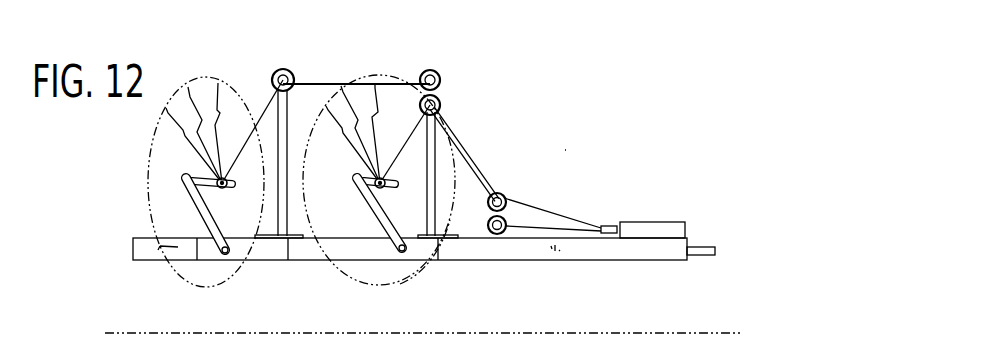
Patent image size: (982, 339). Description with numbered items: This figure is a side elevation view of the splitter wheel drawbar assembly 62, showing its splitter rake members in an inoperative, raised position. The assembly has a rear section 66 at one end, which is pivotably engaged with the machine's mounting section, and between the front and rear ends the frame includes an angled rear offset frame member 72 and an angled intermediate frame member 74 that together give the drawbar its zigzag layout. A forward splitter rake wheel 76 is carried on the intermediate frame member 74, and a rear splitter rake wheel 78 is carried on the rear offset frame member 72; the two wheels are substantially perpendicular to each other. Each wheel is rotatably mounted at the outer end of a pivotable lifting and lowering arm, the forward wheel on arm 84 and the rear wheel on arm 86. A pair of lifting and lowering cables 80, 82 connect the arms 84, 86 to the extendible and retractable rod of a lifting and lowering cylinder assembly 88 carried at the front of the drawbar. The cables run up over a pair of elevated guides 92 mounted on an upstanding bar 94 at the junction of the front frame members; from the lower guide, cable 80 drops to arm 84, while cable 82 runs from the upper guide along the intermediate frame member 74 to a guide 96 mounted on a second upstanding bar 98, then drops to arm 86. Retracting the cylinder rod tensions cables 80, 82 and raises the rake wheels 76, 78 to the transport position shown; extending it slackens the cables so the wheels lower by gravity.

The splitter wheel drawbar assembly 62 is at (570, 143).
The rear section 66 is at (147, 261).
The rear offset frame member 72 is at (213, 261).
The angled intermediate frame member 74 is at (348, 262).
The forward splitter rake wheel 76 is at (417, 270).
The rear splitter rake wheel 78 is at (150, 167).
The lifting and lowering cable 80 is at (485, 192).
The lifting and lowering cable 82 is at (468, 153).
The lifting and lowering arm 84 is at (392, 250).
The lifting and lowering arm 86 is at (197, 217).
The lifting and lowering cylinder assembly 88 is at (658, 210).
The elevated guides 92 is at (422, 100).
The upstanding bar 94 is at (440, 192).
The guide 96 is at (284, 69).
The upstanding bar 98 is at (276, 138).